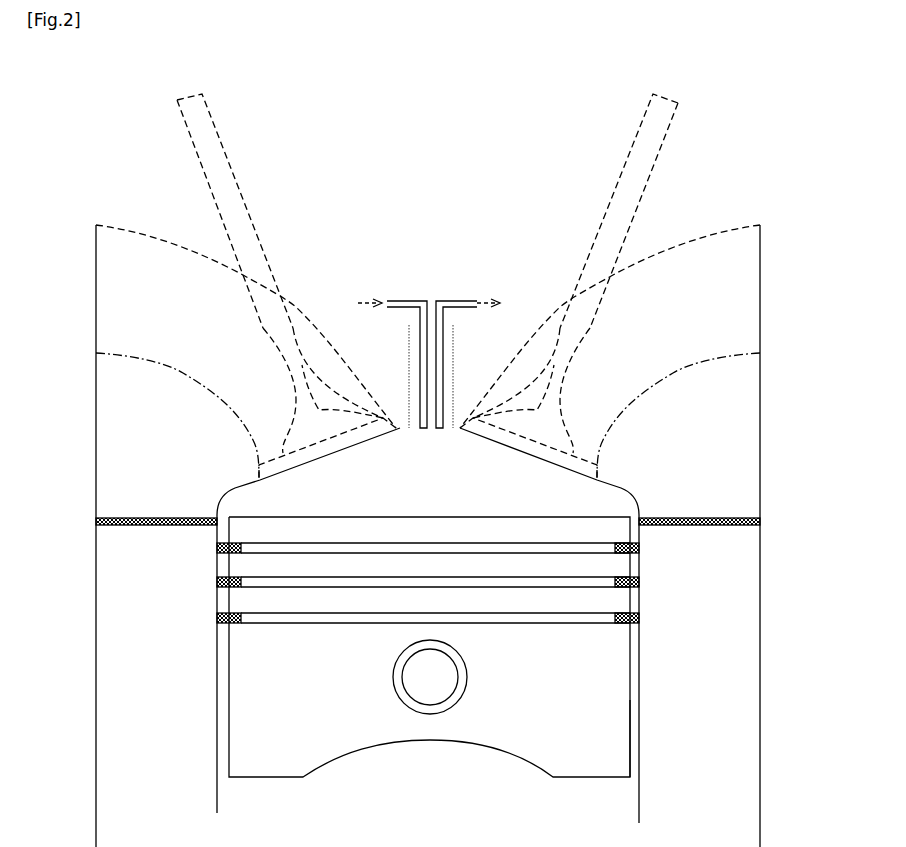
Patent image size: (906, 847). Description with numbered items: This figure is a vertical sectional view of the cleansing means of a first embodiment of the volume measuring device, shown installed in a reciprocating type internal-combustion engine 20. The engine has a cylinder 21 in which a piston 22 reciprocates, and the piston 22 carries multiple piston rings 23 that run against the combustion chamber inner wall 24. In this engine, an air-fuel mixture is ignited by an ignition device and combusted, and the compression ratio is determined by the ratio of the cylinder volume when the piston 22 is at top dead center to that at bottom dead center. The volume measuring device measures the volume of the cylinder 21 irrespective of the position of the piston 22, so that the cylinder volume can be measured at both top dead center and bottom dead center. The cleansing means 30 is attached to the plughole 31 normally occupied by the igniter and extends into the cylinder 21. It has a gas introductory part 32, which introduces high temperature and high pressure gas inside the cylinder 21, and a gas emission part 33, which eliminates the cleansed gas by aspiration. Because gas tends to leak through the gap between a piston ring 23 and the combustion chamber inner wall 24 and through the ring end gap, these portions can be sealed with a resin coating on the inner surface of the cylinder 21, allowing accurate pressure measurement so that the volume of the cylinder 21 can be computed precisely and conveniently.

The internal-combustion engine 20 is at (790, 185).
The cylinder 21 is at (428, 621).
The piston 22 is at (583, 750).
The piston ring 23 is at (217, 548).
The combustion chamber inner wall 24 is at (639, 660).
The cleansing means 30 is at (430, 307).
The plughole 31 is at (415, 342).
The gas introductory part 32 is at (406, 301).
The gas emission part 33 is at (470, 301).